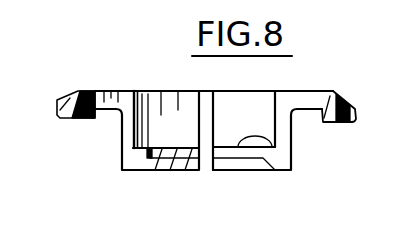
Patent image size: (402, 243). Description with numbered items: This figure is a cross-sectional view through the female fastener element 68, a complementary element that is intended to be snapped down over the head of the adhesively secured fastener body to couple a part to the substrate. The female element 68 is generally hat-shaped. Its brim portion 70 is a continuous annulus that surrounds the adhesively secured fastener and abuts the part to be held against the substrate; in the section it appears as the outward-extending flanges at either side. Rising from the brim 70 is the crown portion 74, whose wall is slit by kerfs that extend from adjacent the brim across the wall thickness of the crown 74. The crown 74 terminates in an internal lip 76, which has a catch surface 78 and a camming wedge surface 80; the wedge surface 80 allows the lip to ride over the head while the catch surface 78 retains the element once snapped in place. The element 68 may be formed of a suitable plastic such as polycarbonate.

The female fastener element 68 is at (82, 82).
The brim portion 70 is at (61, 112).
The crown portion 74 is at (130, 130).
The internal lip 76 is at (147, 150).
The catch surface 78 is at (250, 139).
The camming wedge surface 80 is at (266, 171).